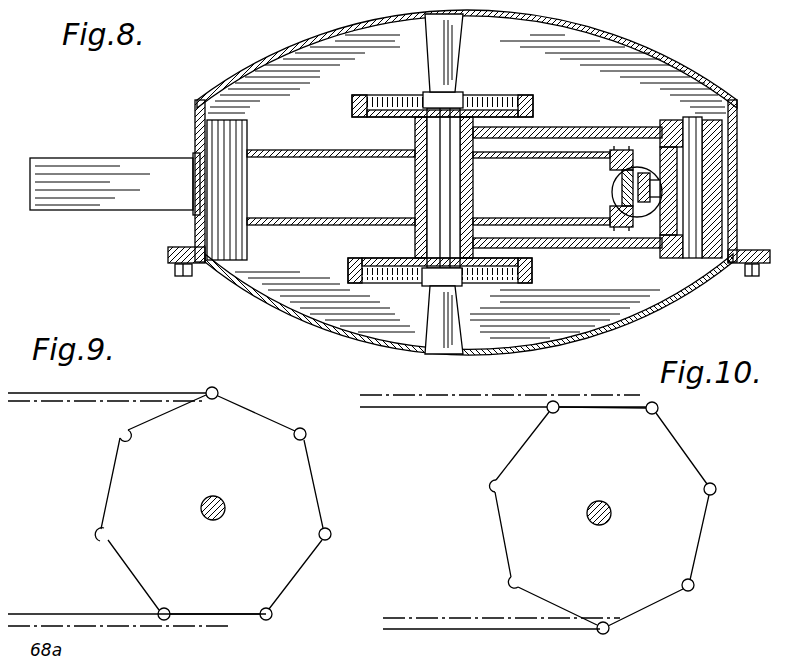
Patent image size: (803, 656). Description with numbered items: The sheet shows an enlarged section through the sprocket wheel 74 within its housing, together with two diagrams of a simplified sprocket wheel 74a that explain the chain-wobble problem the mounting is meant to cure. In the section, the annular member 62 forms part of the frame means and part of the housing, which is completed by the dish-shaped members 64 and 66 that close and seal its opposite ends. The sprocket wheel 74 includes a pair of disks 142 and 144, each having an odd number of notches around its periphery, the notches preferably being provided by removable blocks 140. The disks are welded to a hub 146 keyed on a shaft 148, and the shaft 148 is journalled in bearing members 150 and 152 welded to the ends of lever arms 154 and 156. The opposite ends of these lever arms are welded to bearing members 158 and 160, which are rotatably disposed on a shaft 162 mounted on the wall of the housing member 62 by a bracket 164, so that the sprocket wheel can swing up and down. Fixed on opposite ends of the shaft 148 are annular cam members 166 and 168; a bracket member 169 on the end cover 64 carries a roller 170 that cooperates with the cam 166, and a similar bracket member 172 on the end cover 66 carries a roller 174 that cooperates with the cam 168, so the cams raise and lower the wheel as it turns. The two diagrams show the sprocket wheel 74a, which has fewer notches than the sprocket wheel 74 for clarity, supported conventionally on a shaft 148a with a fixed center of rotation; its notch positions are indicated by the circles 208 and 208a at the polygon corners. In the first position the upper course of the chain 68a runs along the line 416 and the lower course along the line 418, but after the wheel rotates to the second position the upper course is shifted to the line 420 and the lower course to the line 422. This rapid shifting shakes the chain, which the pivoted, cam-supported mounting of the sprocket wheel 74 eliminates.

In FIG. 8, the annular member 62 is at (735, 170).
In FIG. 8, the dish-shaped member 64 is at (382, 344).
In FIG. 8, the dish-shaped member 66 is at (596, 30).
In FIG. 9, the chain 68a is at (60, 394).
In FIG. 10, the chain 68a is at (418, 396).
In FIG. 8, the sprocket wheel 74 is at (292, 146).
In FIG. 9, the sprocket wheel 74a is at (300, 494).
In FIG. 10, the sprocket wheel 74a is at (512, 470).
In FIG. 8, the blocks 140 is at (610, 222).
In FIG. 8, the disk 142 is at (308, 218).
In FIG. 8, the disk 144 is at (312, 158).
In FIG. 8, the hub 146 is at (476, 200).
In FIG. 8, the shaft 148 is at (428, 173).
In FIG. 9, the shaft 148a is at (218, 515).
In FIG. 10, the shaft 148a is at (612, 514).
In FIG. 8, the bearing member 150 is at (408, 237).
In FIG. 8, the bearing member 152 is at (408, 134).
In FIG. 8, the lever arm 154 is at (566, 250).
In FIG. 8, the lever arm 156 is at (551, 127).
In FIG. 8, the bearing member 158 is at (660, 258).
In FIG. 8, the bearing member 160 is at (661, 122).
In FIG. 8, the shaft 162 is at (692, 125).
In FIG. 8, the bracket 164 is at (708, 197).
In FIG. 8, the cam member 166 is at (348, 273).
In FIG. 8, the cam member 168 is at (550, 78).
In FIG. 8, the bracket member 169 is at (452, 322).
In FIG. 8, the roller 170 is at (424, 284).
In FIG. 8, the bracket member 172 is at (450, 52).
In FIG. 8, the roller 174 is at (418, 94).
In FIG. 10, the pin 208 is at (559, 402).
In FIG. 9, the pin 208a is at (219, 392).
In FIG. 9, the line 416 is at (165, 378).
In FIG. 10, the line 416 is at (463, 395).
In FIG. 9, the line 418 is at (42, 612).
In FIG. 10, the line 418 is at (402, 616).
In FIG. 9, the line 420 is at (75, 405).
In FIG. 10, the line 420 is at (470, 400).
In FIG. 9, the line 422 is at (128, 624).
In FIG. 10, the line 422 is at (428, 626).